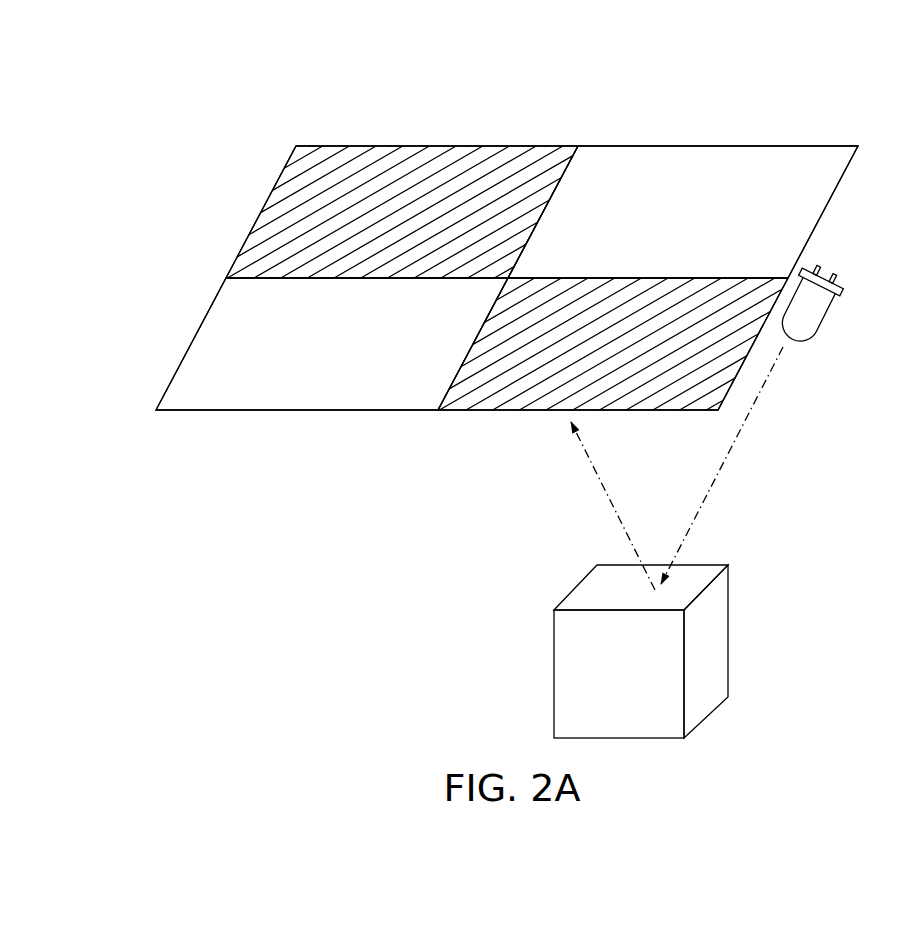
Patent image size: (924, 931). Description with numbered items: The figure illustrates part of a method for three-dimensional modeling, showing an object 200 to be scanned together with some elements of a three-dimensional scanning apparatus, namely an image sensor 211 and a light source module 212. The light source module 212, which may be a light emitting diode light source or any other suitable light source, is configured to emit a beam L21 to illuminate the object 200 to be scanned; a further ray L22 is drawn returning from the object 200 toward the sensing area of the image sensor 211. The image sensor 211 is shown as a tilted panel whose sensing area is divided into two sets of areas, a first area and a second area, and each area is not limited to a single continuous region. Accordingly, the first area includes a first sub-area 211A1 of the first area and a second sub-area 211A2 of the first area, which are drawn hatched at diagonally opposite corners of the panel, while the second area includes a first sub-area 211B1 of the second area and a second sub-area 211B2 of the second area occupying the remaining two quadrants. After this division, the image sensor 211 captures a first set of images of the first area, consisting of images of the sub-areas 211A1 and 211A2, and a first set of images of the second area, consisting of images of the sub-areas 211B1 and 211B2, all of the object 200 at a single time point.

The image sensor 211 is at (588, 109).
The first sub-area of the first area 211A1 is at (568, 359).
The second sub-area of the first area 211A2 is at (358, 228).
The first sub-area of the second area 211B1 is at (640, 231).
The second sub-area of the second area 211B2 is at (288, 359).
The light source module 212 is at (840, 254).
The beam L21 is at (722, 465).
The reflected light ray L22 is at (607, 506).
The object to be scanned 200 is at (767, 613).